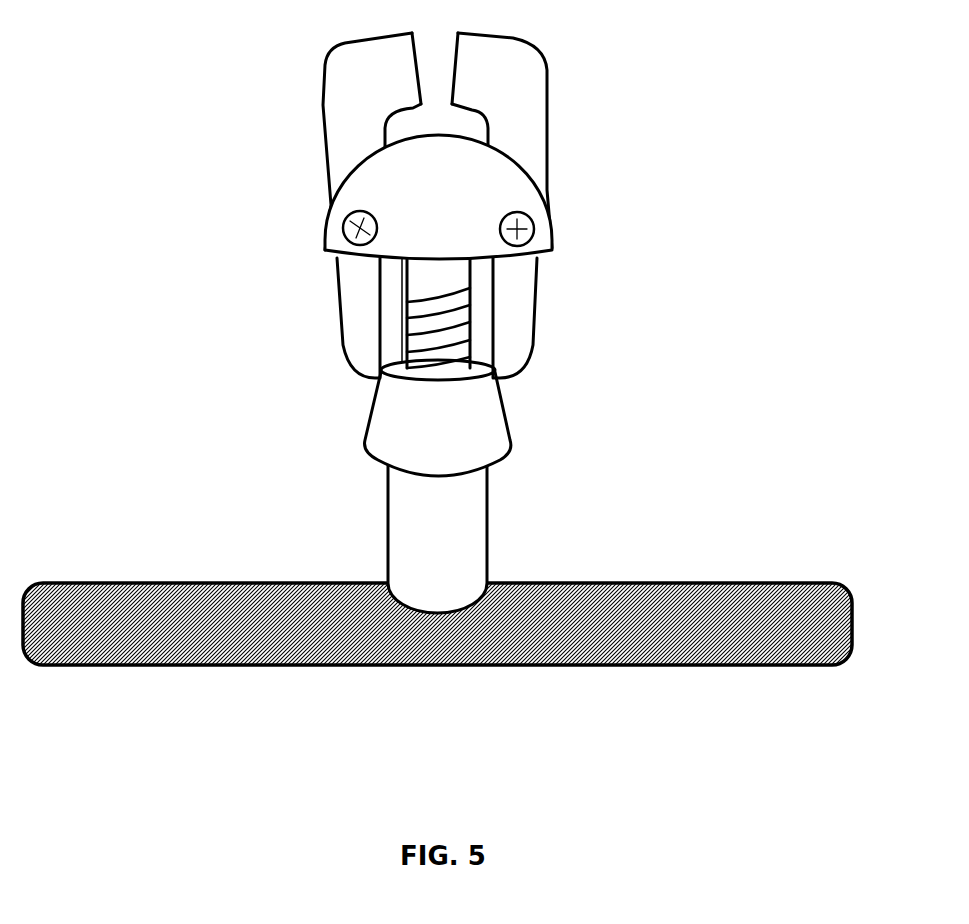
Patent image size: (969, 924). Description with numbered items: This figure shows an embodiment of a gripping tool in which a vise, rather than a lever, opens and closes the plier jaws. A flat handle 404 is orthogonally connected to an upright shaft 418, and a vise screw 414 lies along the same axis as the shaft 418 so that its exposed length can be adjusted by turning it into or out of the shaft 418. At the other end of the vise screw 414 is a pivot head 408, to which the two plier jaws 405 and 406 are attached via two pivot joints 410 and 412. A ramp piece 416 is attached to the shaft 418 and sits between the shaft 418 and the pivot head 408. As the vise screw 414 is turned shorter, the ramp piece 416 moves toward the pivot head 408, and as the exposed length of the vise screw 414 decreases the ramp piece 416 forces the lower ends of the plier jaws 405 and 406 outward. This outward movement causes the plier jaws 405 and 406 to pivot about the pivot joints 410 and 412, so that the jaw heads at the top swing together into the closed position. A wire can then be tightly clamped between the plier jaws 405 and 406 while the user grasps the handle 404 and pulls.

The handle 404 is at (800, 608).
The plier jaw 405 is at (385, 57).
The plier jaw 406 is at (500, 67).
The pivot head 408 is at (510, 187).
The pivot joint 410 is at (343, 224).
The pivot joint 412 is at (534, 228).
The vise screw 414 is at (442, 320).
The ramp piece 416 is at (480, 438).
The shaft 418 is at (463, 535).